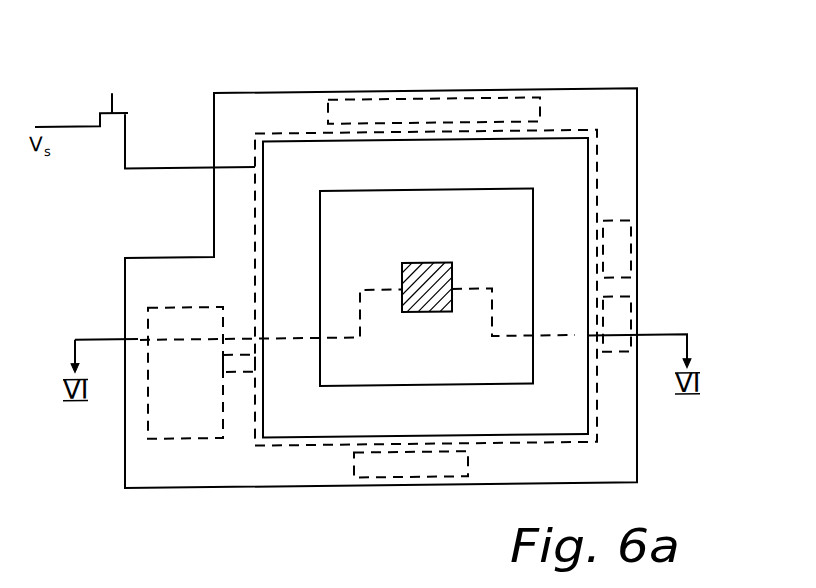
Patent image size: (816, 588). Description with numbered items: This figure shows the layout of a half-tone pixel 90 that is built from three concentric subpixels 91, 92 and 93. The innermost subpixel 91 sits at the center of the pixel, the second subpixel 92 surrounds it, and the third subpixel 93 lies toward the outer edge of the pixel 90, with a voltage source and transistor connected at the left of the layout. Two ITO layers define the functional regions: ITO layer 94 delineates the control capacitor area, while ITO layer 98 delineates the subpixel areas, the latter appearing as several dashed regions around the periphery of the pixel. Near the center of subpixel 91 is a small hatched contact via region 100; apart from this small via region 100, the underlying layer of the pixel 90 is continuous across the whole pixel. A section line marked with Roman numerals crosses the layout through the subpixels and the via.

The half-tone pixel 90 is at (600, 57).
The subpixel 91 is at (512, 229).
The subpixel 92 is at (305, 317).
The subpixel 93 is at (163, 293).
The ITO layer 94 is at (597, 422).
The ITO layer 98 is at (637, 264).
The contact via region 100 is at (402, 270).